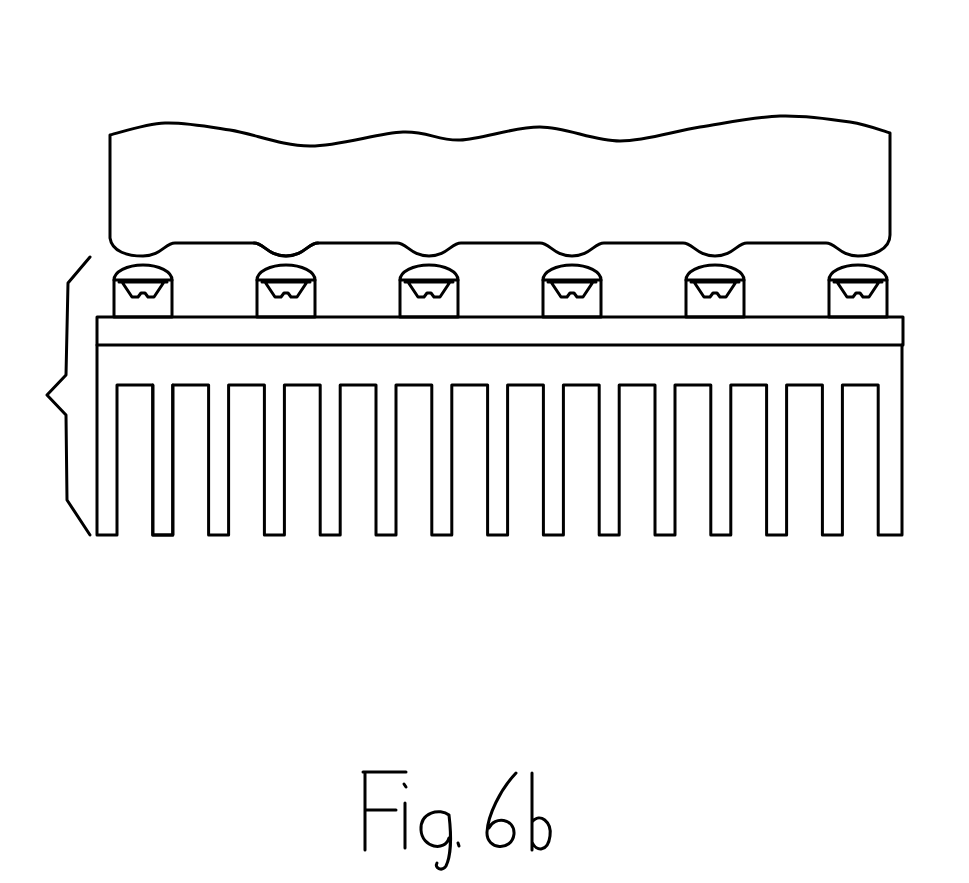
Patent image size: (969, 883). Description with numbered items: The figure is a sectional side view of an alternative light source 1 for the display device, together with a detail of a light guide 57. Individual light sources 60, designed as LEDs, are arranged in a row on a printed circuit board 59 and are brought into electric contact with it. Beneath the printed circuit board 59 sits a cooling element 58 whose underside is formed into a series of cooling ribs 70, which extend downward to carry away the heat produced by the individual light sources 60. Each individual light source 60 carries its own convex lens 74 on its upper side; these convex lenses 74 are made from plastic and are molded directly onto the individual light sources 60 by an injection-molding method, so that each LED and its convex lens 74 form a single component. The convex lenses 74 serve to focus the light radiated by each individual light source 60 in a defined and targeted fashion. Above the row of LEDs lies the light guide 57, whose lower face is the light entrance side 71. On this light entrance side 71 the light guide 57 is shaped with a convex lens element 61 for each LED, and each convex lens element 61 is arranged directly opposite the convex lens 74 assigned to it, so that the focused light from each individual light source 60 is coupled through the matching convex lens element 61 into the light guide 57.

The light source 1 is at (53, 396).
The light guide 57 is at (418, 162).
The cooling element 58 is at (287, 365).
The printed circuit board 59 is at (469, 328).
The individual light source 60 is at (452, 305).
The convex lens element 61 is at (281, 253).
The cooling rib 70 is at (165, 515).
The light entrance side 71 is at (347, 246).
The convex lens 74 is at (148, 273).